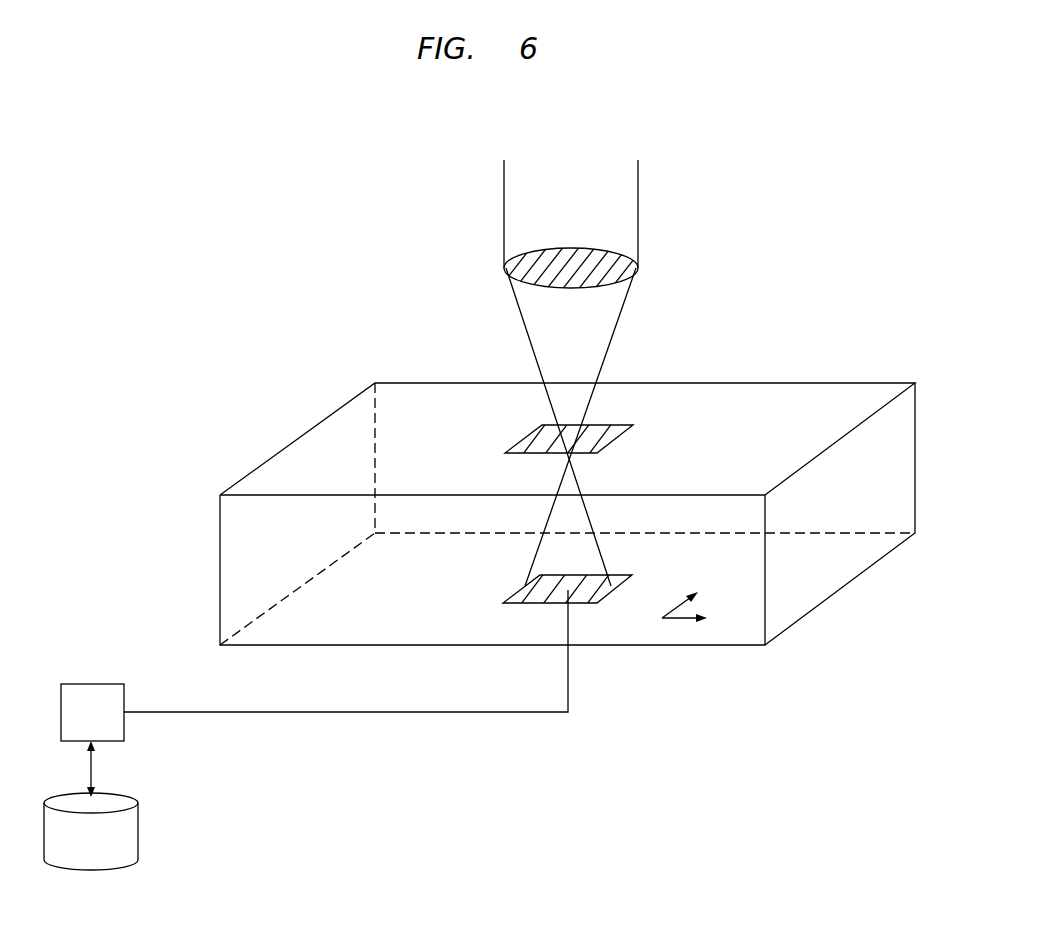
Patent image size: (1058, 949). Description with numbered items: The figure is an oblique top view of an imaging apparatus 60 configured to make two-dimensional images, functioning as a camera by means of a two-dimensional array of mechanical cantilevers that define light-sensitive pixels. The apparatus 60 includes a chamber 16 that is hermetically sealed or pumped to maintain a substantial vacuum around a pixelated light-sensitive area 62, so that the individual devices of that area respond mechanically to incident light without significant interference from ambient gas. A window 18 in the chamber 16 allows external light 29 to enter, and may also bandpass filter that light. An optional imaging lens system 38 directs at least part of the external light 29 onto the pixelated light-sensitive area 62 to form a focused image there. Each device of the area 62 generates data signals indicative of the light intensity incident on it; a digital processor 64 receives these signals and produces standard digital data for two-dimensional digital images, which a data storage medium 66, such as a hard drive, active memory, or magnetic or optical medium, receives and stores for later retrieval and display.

The chamber 16 is at (907, 430).
The window 18 is at (514, 453).
The external light 29 is at (586, 207).
The imaging lens system 38 is at (636, 268).
The imaging apparatus 60 is at (233, 390).
The pixelated light-sensitive area 62 is at (513, 603).
The digital processor 64 is at (105, 725).
The data storage medium 66 is at (105, 852).